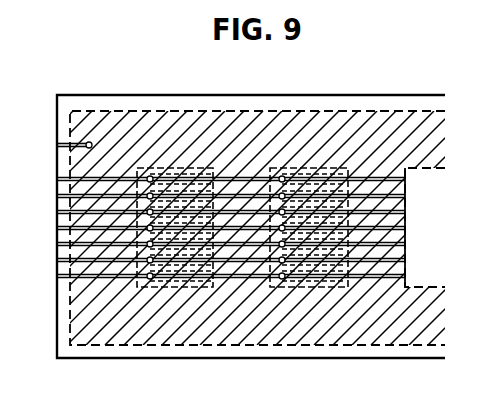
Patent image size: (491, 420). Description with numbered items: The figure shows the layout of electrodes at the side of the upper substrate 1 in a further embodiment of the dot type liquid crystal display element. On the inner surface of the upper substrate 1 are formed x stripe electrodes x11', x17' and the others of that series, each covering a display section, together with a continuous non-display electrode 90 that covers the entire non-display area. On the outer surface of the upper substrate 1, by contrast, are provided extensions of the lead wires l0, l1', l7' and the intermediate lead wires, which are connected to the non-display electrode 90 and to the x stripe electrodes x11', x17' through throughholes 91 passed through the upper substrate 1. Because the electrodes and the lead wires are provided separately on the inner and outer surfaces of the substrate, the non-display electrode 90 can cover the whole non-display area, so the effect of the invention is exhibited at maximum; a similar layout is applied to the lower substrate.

The upper substrate 1 is at (425, 95).
The non-display electrode 90 is at (187, 124).
The throughholes 91 is at (148, 177).
The lead wire l0 is at (68, 143).
The lead wire l1' is at (217, 163).
The lead wire l7' is at (217, 293).
The x stripe electrode x11' is at (308, 118).
The x stripe electrode x17' is at (245, 341).